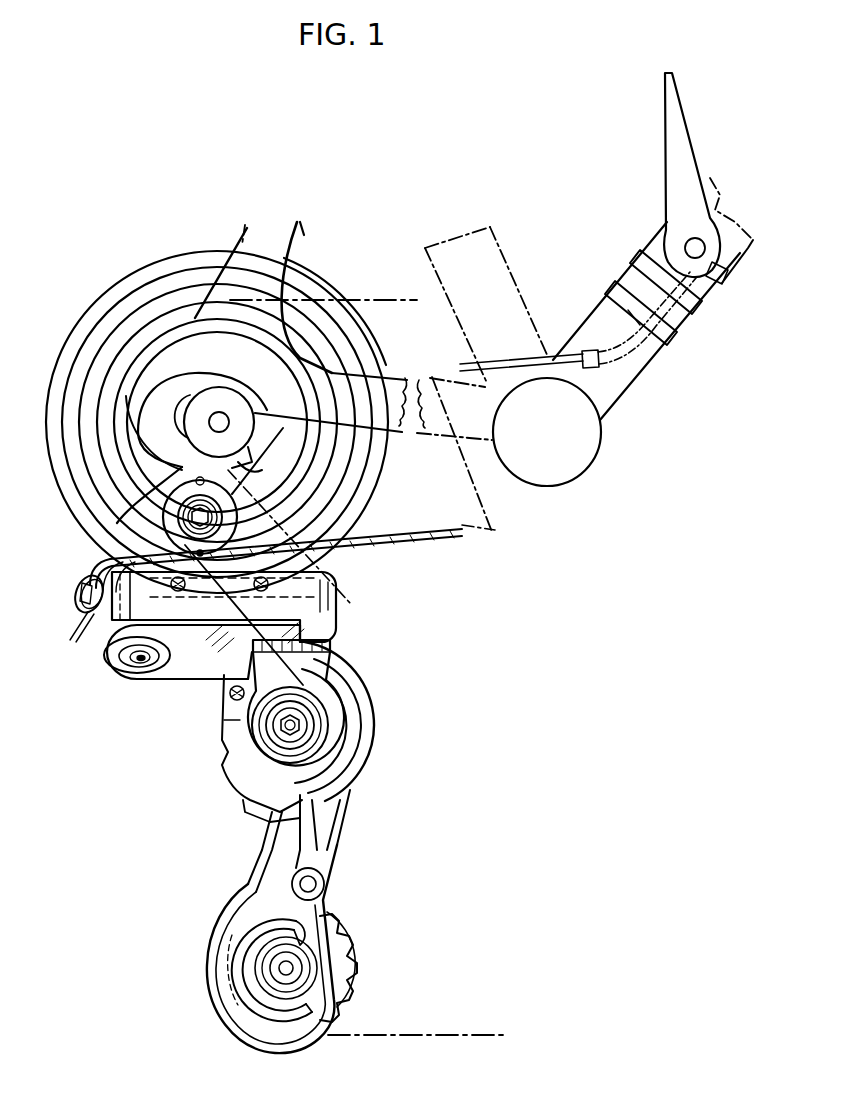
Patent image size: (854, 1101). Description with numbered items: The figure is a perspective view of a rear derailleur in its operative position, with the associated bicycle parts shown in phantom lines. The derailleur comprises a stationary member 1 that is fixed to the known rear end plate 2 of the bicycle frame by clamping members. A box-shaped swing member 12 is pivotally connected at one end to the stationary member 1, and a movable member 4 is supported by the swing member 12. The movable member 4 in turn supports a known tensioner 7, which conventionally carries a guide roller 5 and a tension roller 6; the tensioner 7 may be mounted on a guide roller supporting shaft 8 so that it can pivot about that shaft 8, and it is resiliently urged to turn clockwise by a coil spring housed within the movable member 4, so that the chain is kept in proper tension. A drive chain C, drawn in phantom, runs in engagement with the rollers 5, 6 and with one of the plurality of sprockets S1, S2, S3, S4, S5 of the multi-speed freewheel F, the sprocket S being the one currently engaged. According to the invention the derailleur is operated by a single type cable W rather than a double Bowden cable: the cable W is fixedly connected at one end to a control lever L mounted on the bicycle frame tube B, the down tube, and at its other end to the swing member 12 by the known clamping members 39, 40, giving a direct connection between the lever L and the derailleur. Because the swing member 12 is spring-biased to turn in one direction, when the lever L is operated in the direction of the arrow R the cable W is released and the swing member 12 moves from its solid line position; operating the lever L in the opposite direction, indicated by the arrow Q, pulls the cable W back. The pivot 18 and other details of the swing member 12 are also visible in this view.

The stationary member 1 is at (117, 523).
The rear end plate 2 is at (243, 466).
The movable member 4 is at (307, 678).
The guide roller 5 is at (235, 758).
The tension roller 6 is at (342, 928).
The tensioner 7 is at (345, 826).
The guide roller supporting shaft 8 is at (292, 725).
The swing member 12 is at (320, 596).
The pivot pin 18 is at (152, 665).
The clamping member 39 is at (82, 590).
The clamping member 40 is at (100, 640).
The single type cable W is at (455, 530).
The sprocket S is at (345, 466).
The sprocket S1 is at (196, 321).
The sprocket S2 is at (178, 305).
The sprocket S3 is at (147, 302).
The sprocket S4 is at (108, 307).
The sprocket S5 is at (73, 323).
The multi-speed freewheel F is at (313, 270).
The drive chain C is at (386, 300).
The control lever L is at (668, 158).
The bicycle frame tube B is at (712, 305).
The lever direction Q is at (596, 88).
The direction of lever operation R is at (582, 96).